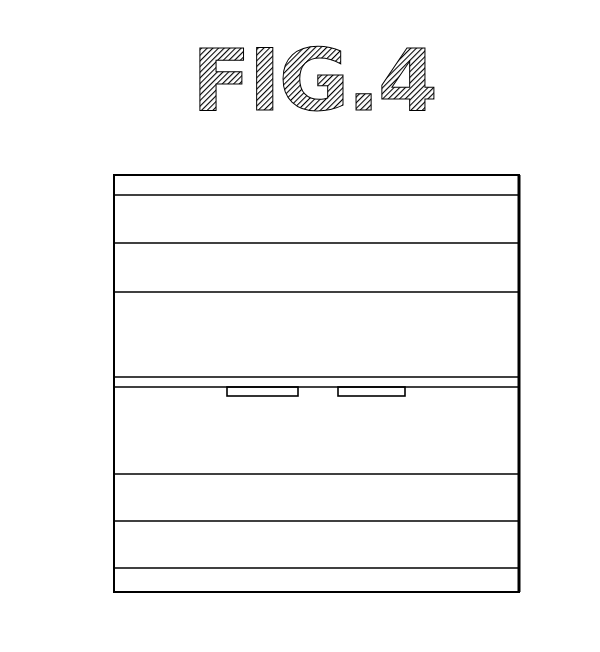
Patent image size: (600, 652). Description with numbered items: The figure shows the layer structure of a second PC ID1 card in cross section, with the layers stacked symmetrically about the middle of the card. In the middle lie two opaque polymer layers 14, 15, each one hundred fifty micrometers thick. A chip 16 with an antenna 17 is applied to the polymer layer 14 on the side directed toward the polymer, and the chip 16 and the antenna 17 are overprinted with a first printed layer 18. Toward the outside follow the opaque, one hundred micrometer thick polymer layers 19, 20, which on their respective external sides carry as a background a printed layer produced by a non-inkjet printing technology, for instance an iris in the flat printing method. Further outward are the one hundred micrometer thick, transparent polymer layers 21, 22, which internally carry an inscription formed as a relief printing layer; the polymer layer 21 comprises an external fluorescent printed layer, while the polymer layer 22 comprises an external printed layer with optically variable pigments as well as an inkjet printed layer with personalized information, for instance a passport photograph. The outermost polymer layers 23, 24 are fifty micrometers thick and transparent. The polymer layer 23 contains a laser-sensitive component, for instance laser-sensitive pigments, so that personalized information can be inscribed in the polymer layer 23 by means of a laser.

The opaque polymer layer 14 is at (135, 437).
The opaque polymer layer 15 is at (135, 343).
The chip 16 is at (271, 396).
The antenna 17 is at (375, 396).
The first printed layer 18 is at (118, 384).
The opaque polymer layer 19 is at (135, 270).
The opaque polymer layer 20 is at (127, 500).
The transparent polymer layer 21 is at (127, 223).
The transparent polymer layer 22 is at (127, 546).
The outermost polymer layer 23 is at (128, 188).
The outermost polymer layer 24 is at (118, 582).